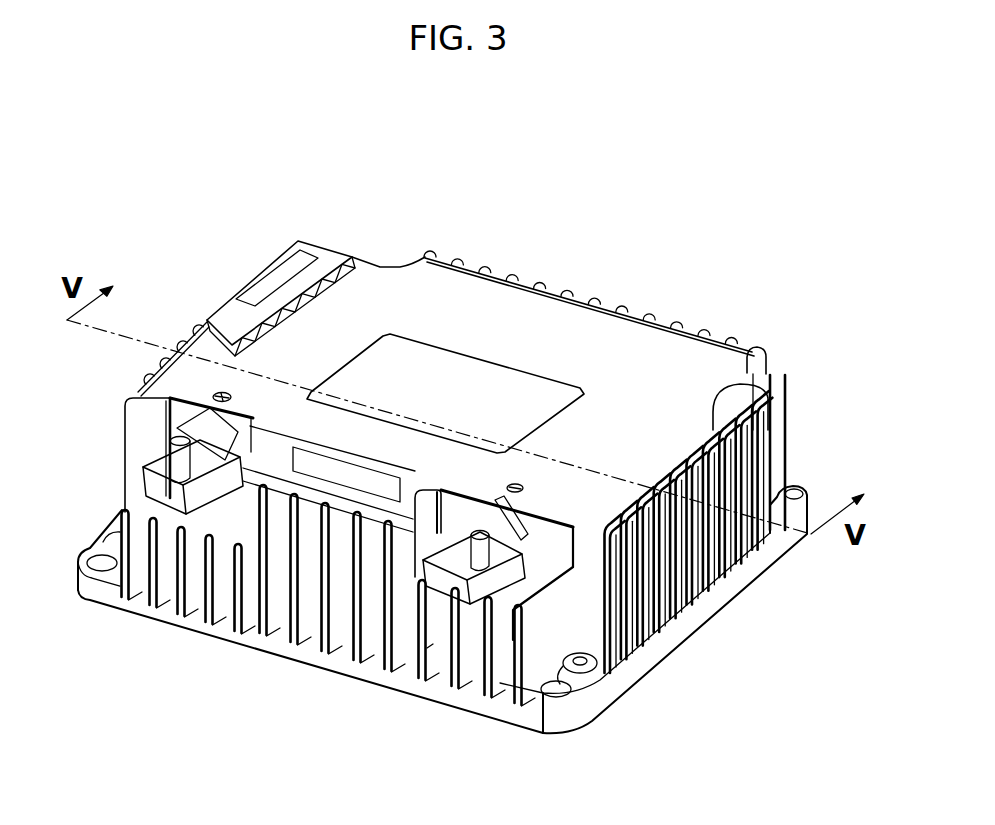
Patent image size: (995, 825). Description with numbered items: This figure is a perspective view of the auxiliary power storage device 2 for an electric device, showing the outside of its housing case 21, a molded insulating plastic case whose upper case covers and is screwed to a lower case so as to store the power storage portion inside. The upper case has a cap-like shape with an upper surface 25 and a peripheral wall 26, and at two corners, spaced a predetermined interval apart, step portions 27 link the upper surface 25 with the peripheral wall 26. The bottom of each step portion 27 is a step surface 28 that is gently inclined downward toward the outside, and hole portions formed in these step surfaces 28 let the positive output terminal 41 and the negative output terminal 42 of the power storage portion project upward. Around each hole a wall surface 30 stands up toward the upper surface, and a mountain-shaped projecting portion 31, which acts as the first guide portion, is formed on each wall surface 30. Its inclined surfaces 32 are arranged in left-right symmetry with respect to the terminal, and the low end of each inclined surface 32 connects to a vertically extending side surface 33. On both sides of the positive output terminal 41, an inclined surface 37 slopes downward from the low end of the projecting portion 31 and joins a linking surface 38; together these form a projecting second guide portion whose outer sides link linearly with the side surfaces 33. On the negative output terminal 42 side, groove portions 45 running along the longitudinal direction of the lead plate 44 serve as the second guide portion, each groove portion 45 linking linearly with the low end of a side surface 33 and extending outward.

The auxiliary power storage device 2 is at (621, 242).
The housing case 21 is at (607, 335).
The upper surface 25 is at (364, 470).
The peripheral wall 26 is at (337, 590).
The step portion 27 is at (322, 428).
The step surface 28 is at (207, 540).
The wall surface 30 is at (270, 428).
The mountain-shaped projecting portion 31 is at (276, 438).
The inclined surface 32 is at (140, 395).
The side surface 33 is at (160, 428).
The inclined surface 37 is at (323, 467).
The linking surface 38 is at (242, 545).
The positive output terminal 41 is at (173, 463).
The negative output terminal 42 is at (440, 526).
The lead plate 44 is at (628, 650).
The groove portion 45 is at (420, 650).